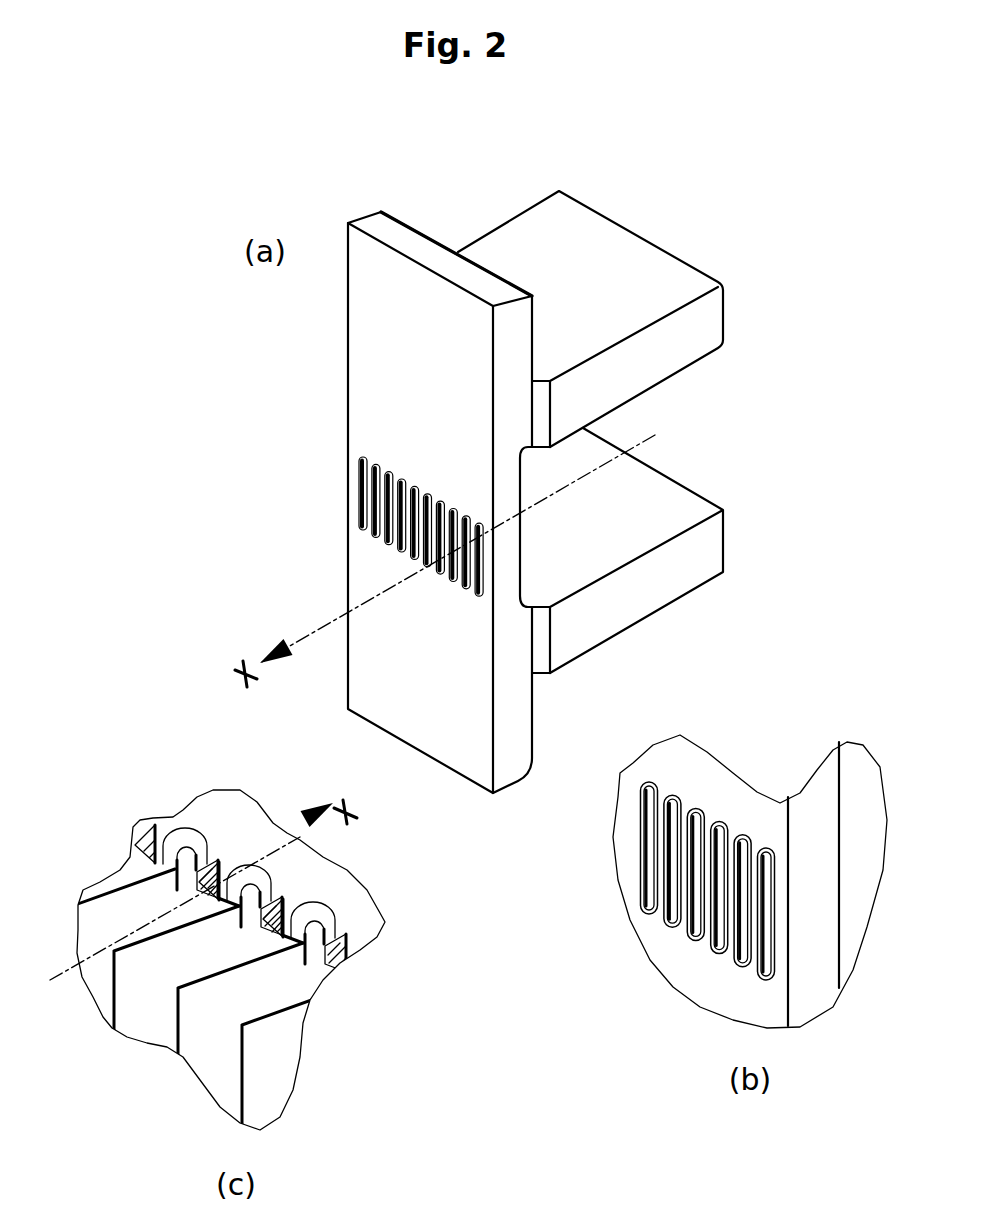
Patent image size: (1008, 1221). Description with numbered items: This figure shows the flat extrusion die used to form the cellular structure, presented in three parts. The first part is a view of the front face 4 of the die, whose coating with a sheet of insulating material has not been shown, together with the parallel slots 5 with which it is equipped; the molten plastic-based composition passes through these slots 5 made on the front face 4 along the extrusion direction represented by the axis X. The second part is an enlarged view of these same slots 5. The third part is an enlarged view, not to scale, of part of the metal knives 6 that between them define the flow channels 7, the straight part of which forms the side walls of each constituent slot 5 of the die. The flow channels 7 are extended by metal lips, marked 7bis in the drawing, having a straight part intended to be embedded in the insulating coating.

The front face 4 is at (355, 340).
The slots 5 is at (480, 597).
The metal knives 6 is at (249, 911).
The flow channels 7 is at (103, 915).
The bent fin ends 7bis is at (185, 870).